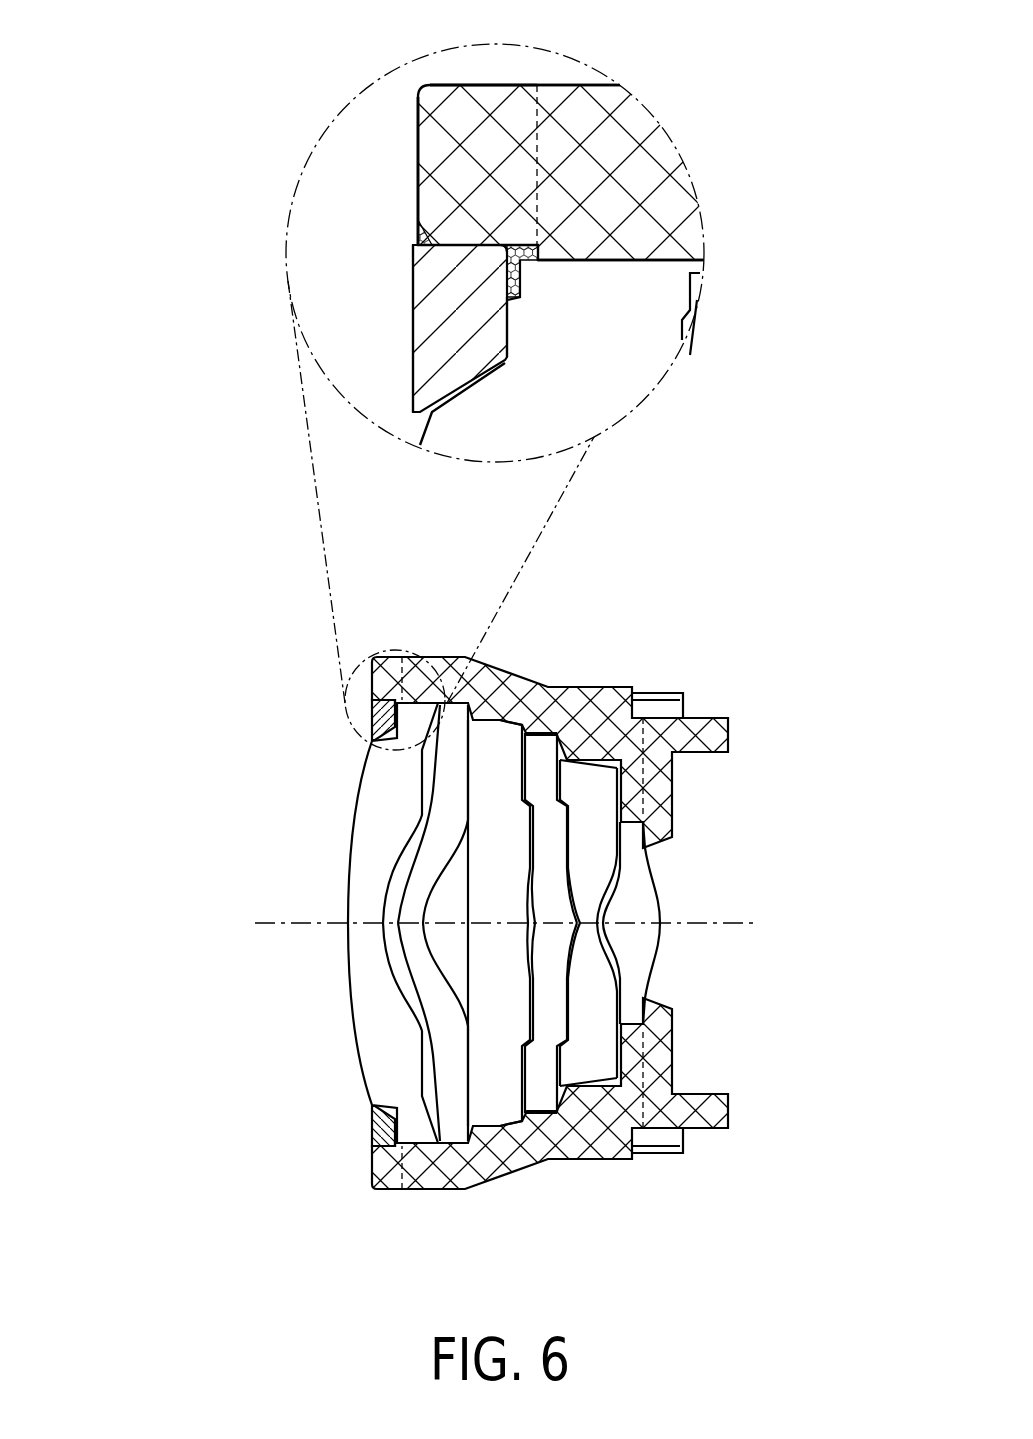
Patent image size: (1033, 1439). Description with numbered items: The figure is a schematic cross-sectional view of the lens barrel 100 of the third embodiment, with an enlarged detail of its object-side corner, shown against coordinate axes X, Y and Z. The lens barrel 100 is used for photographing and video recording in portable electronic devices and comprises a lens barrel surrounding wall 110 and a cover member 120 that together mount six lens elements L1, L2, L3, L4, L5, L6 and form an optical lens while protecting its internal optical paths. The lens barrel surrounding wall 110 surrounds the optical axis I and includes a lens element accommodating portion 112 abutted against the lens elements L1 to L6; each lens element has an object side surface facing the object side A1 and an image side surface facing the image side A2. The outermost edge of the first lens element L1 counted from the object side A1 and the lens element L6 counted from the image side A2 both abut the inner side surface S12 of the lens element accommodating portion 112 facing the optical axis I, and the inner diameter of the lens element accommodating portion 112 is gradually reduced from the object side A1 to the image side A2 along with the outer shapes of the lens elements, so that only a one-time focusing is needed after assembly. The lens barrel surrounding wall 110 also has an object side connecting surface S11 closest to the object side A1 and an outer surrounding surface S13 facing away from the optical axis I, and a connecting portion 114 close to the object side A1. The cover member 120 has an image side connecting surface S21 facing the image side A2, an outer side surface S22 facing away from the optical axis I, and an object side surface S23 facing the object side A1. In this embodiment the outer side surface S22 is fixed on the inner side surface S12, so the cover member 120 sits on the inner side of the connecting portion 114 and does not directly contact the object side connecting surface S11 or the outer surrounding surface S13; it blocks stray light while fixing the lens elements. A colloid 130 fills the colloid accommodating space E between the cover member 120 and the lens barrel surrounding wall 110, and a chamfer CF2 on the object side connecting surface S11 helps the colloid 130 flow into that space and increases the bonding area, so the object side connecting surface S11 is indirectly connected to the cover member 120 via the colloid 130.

The lens barrel 100 is at (893, 1314).
The lens barrel surrounding wall 110 is at (614, 635).
The lens element accommodating portion 112 is at (565, 690).
The connecting portion 114 is at (392, 655).
The cover member 120 is at (368, 719).
The colloid 130 is at (413, 233).
The object side connecting surface S11 is at (410, 147).
The inner side surface S12 is at (537, 268).
The outer surrounding surface S13 is at (503, 82).
The image side connecting surface S21 is at (511, 337).
The outer side surface S22 is at (464, 242).
The object side surface S23 is at (411, 333).
The chamfer CF2 is at (418, 244).
The colloid accommodating space E is at (584, 264).
The optical axis I is at (515, 923).
The lens element L1 is at (418, 1120).
The lens element L2 is at (452, 1125).
The lens element L3 is at (495, 1100).
The lens element L4 is at (538, 1088).
The lens element L5 is at (588, 1062).
The lens element L6 is at (636, 960).
The object side A1 is at (215, 632).
The image side A2 is at (908, 632).
The X axis X is at (87, 1250).
The Y axis Y is at (87, 1250).
The Z axis Z is at (76, 1271).